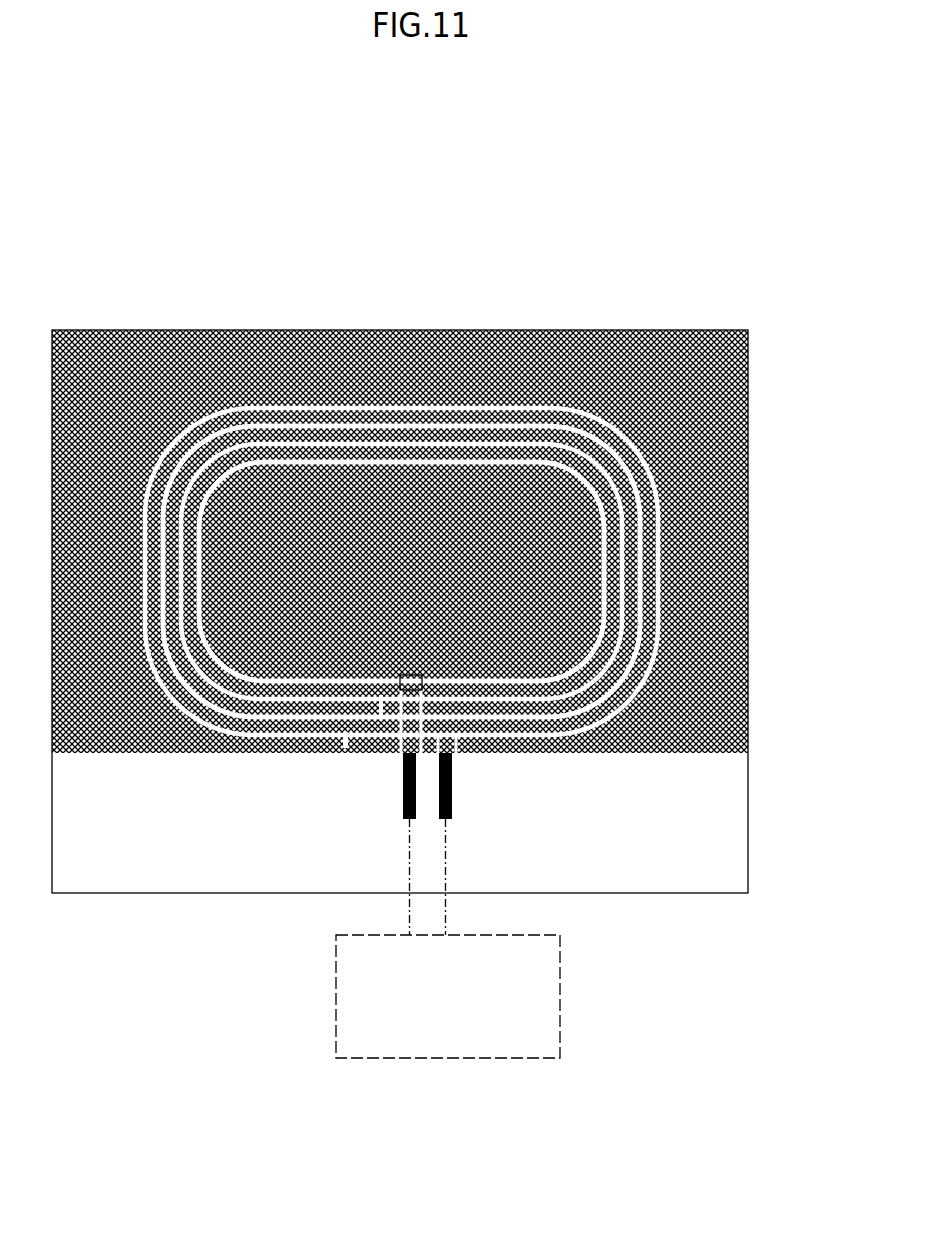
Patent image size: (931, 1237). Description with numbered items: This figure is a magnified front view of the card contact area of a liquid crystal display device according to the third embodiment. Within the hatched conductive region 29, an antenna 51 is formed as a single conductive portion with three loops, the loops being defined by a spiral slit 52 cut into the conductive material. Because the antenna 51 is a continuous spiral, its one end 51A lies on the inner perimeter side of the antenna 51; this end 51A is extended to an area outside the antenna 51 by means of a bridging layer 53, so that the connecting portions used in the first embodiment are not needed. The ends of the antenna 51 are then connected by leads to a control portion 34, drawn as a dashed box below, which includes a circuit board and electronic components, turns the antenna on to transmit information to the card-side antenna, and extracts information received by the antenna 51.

The substrate / circuit board 29 is at (722, 828).
The antenna 51 is at (385, 447).
The spiral slit 52 is at (518, 463).
The bridging layer 53 is at (365, 722).
The one end 51A is at (422, 690).
The control portion 34 is at (560, 1002).